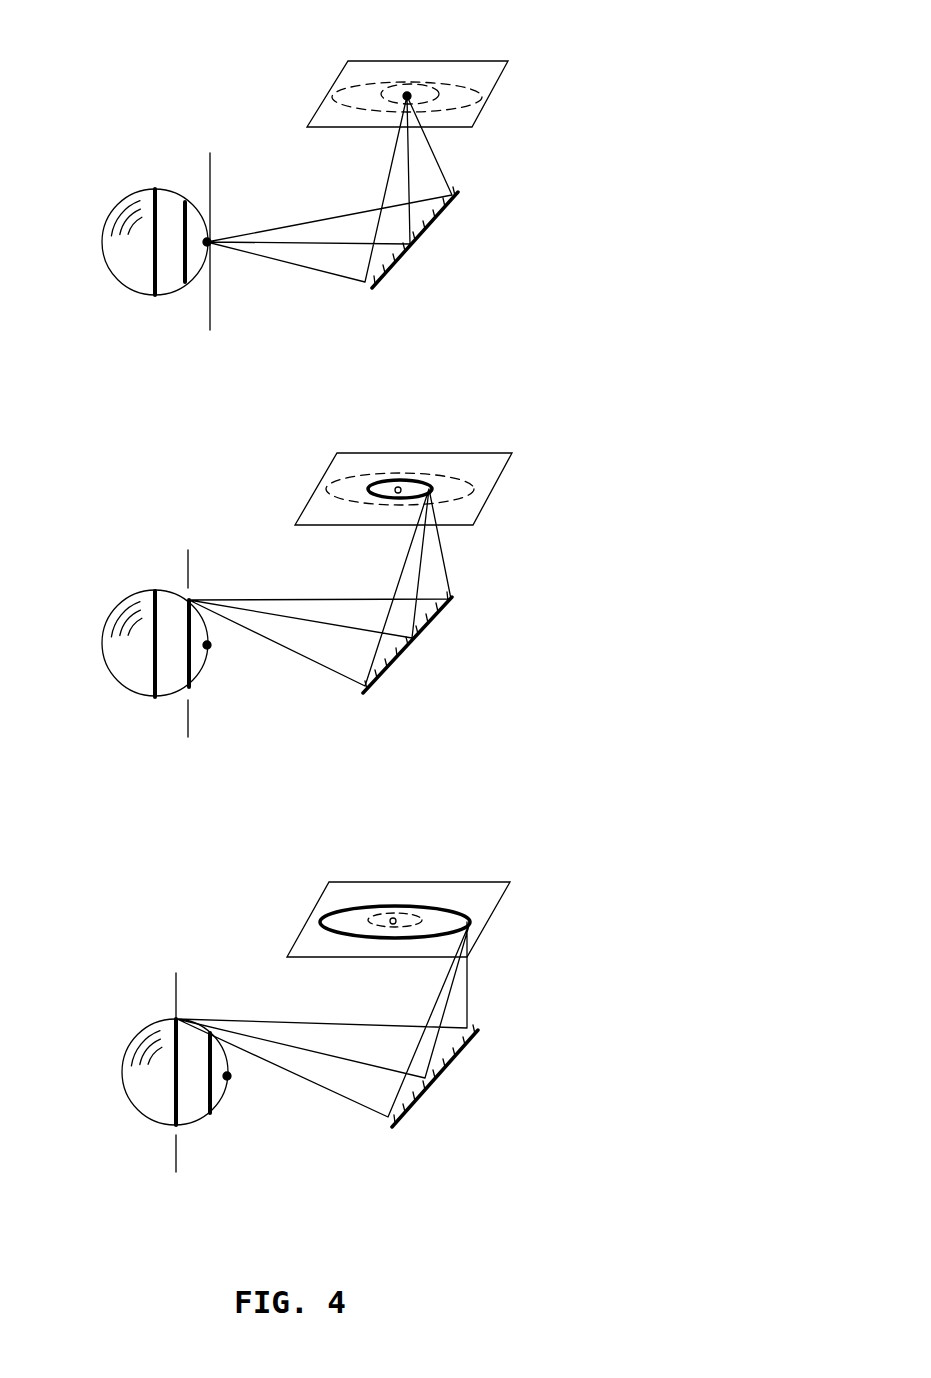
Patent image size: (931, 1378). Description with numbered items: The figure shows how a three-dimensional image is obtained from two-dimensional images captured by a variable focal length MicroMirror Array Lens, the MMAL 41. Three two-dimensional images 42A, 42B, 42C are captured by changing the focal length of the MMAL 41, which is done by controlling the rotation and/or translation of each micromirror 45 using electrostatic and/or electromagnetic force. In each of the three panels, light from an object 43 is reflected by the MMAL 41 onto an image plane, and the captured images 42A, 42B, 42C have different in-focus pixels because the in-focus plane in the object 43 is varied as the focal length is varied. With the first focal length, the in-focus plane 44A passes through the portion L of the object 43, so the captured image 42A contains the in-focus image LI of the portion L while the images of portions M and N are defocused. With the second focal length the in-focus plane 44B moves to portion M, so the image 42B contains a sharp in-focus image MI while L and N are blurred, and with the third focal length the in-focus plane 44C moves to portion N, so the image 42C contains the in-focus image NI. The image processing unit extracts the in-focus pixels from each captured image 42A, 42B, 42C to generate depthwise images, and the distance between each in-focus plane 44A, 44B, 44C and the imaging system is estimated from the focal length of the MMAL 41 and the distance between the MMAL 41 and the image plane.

The variable focal length MicroMirror Array Lens (MMAL) 41 is at (420, 686).
The captured two-dimensional image with first focal length 42A is at (441, 83).
The captured two-dimensional image with second focal length 42B is at (432, 481).
The captured two-dimensional image with third focal length 42C is at (422, 901).
The object 43 is at (140, 187).
The in-focus plane 44A is at (216, 227).
The in-focus plane 44B is at (196, 625).
The in-focus plane 44C is at (186, 1058).
The micromirror 45 is at (363, 288).
The portion of the object L is at (218, 230).
The portion of the object M is at (185, 287).
The portion of the object N is at (153, 295).
The in-focus image LI is at (403, 95).
The in-focus image of portion M MI is at (377, 490).
The in-focus image of portion N NI is at (328, 910).